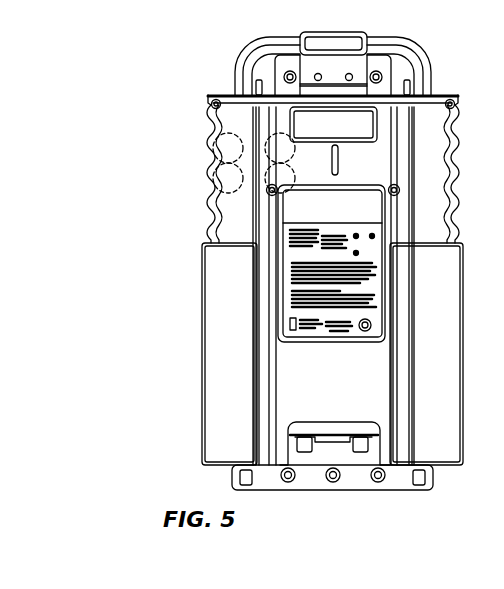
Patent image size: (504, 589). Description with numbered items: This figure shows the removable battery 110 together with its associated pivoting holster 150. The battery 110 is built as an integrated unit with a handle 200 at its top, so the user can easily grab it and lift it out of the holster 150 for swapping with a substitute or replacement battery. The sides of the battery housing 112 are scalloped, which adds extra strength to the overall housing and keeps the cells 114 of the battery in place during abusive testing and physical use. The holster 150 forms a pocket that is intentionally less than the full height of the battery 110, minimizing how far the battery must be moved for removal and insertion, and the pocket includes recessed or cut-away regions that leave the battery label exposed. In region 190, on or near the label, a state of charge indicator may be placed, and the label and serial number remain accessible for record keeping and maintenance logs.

The handle 200 is at (242, 80).
The removable battery 110 is at (185, 112).
The cells 114 is at (212, 158).
The battery housing 112 is at (210, 202).
The pivoting holster 150 is at (208, 288).
The label region 190 is at (288, 280).